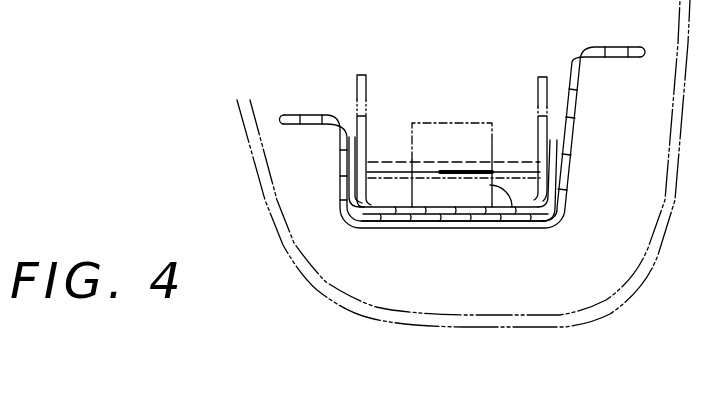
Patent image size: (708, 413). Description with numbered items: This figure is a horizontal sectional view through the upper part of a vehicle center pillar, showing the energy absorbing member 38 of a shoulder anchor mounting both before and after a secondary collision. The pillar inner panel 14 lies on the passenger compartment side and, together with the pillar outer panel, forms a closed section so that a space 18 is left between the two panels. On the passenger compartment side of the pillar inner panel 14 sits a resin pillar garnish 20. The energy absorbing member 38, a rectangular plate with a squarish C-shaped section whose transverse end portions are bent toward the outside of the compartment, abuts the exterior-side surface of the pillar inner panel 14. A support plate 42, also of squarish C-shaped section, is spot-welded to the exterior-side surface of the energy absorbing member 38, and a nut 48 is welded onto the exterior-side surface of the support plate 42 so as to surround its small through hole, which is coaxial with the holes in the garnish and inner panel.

The pillar inner panel 14 is at (578, 115).
The space 18 is at (450, 68).
The pillar garnish 20 is at (508, 326).
The energy absorbing member 38 is at (373, 226).
The support plate 42 is at (365, 72).
The nut 48 is at (470, 123).